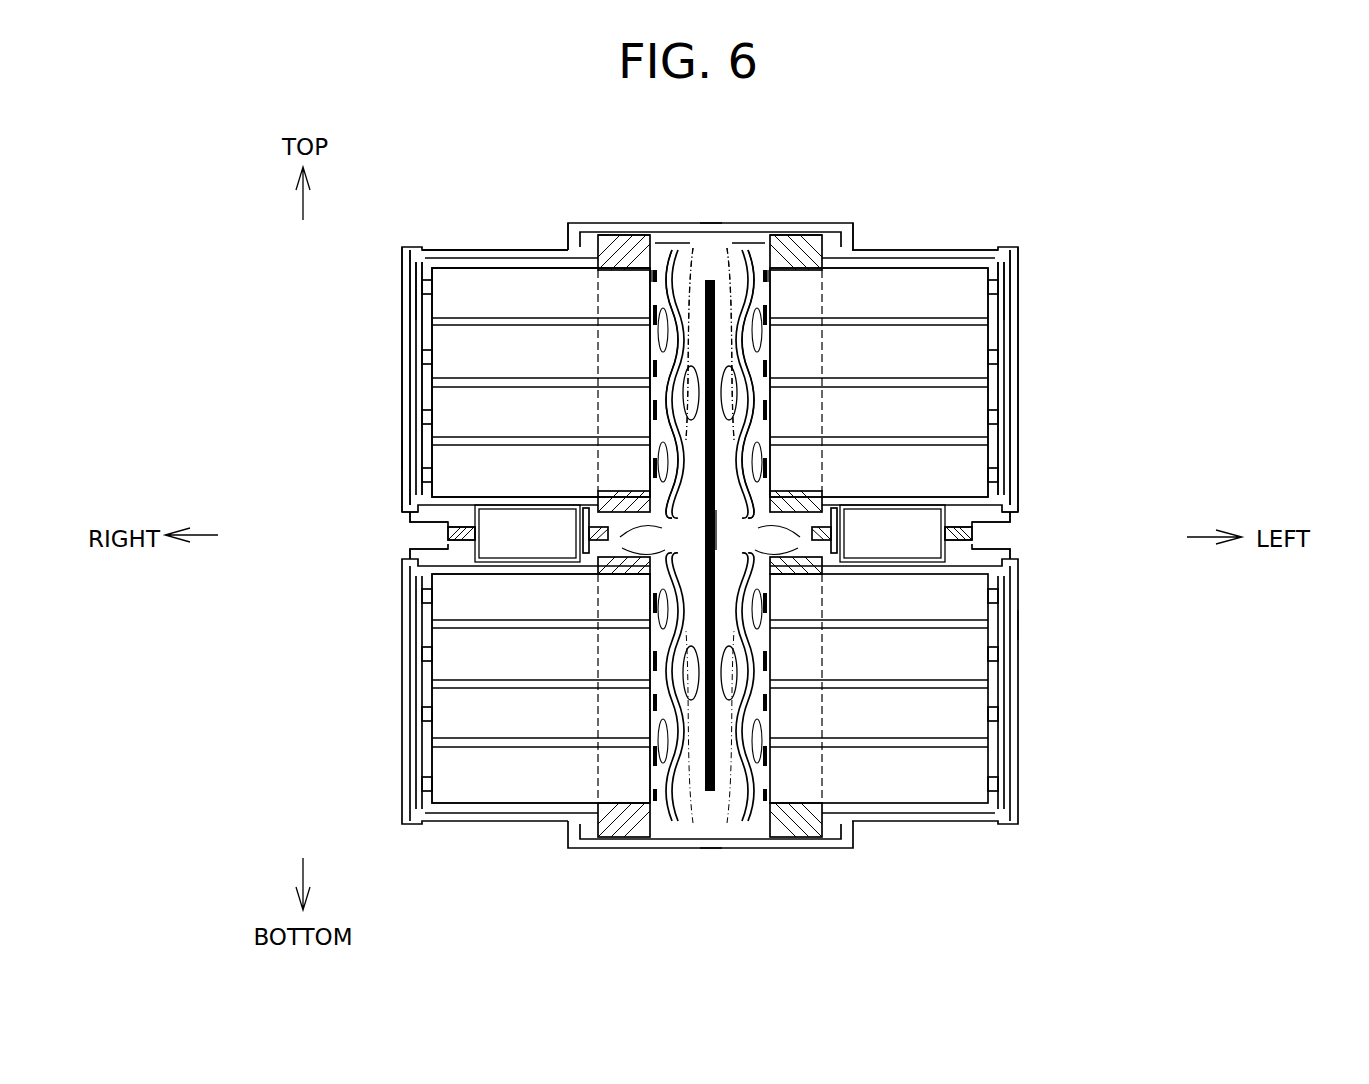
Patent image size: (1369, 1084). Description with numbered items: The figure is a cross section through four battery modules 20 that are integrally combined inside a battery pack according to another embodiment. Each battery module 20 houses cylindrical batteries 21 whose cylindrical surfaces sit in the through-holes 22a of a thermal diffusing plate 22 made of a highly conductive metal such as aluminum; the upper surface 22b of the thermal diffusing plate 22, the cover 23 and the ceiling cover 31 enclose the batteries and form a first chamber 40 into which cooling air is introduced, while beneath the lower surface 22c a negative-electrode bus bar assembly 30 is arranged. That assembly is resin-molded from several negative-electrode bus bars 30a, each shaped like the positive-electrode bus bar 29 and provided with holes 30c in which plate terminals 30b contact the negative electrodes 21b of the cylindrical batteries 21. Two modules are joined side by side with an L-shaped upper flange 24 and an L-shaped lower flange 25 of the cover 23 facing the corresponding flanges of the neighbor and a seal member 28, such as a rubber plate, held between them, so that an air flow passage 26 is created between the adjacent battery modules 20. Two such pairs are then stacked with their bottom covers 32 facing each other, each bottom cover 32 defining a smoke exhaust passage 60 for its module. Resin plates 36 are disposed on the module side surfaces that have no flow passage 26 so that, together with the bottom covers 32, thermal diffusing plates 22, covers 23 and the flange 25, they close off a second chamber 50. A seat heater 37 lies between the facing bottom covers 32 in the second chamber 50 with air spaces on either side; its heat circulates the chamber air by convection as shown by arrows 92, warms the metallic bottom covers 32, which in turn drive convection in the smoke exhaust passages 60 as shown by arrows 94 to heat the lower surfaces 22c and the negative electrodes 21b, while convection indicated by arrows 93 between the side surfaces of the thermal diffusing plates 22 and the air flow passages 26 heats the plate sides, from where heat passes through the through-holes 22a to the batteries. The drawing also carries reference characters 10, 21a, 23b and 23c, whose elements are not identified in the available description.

The battery pack 10 is at (1206, 175).
The battery module 20 is at (1121, 187).
The cylindrical battery 21 is at (548, 272).
The side wall of module case 21a is at (416, 330).
The negative electrode 21b is at (666, 485).
The thermal diffusing plate 22 is at (586, 226).
The through-hole 22a is at (620, 246).
The upper surface 22b is at (576, 240).
The lower surface 22c is at (662, 246).
The cover 23 is at (505, 252).
The case cover 23b is at (470, 252).
The case recess 23c is at (404, 455).
The upper flange 24 is at (450, 522).
The lower flange 25 is at (502, 522).
The air flow passage 26 is at (414, 506).
The seal member 28 is at (452, 537).
The positive-electrode bus bar 29 is at (408, 372).
The negative-electrode bus bar assembly 30 is at (600, 282).
The negative-electrode bus bar 30a is at (652, 300).
The plate terminal 30b is at (652, 400).
The hole 30c is at (652, 345).
The ceiling cover 31 is at (414, 266).
The bottom cover 32 is at (668, 252).
The resin plate 36 is at (711, 226).
The seat heater 37 is at (710, 794).
The first chamber 40 is at (483, 237).
The second chamber 50 is at (780, 512).
The smoke exhaust passage 60 is at (748, 456).
The arrows 92 is at (664, 262).
The arrows 93 is at (612, 576).
The arrows 94 is at (790, 312).